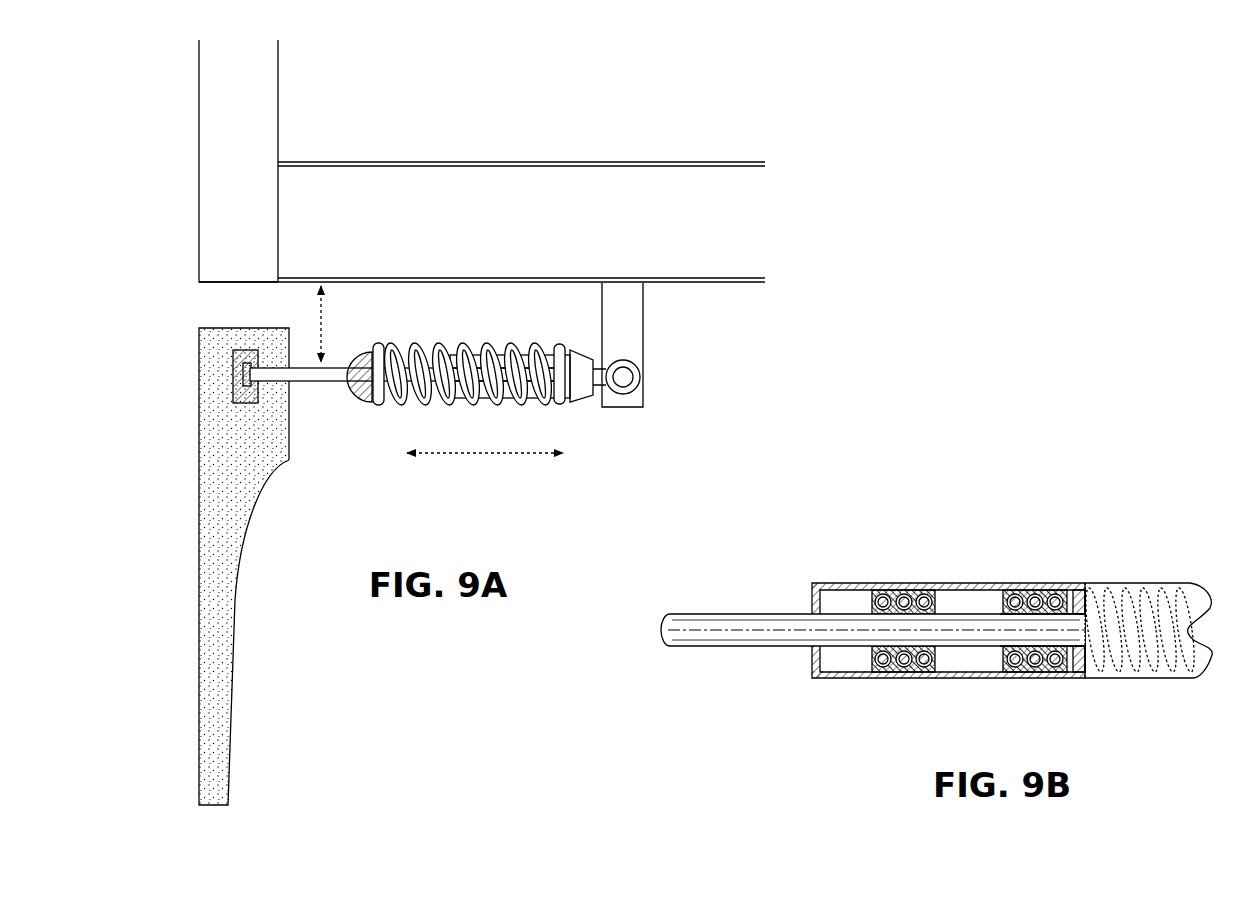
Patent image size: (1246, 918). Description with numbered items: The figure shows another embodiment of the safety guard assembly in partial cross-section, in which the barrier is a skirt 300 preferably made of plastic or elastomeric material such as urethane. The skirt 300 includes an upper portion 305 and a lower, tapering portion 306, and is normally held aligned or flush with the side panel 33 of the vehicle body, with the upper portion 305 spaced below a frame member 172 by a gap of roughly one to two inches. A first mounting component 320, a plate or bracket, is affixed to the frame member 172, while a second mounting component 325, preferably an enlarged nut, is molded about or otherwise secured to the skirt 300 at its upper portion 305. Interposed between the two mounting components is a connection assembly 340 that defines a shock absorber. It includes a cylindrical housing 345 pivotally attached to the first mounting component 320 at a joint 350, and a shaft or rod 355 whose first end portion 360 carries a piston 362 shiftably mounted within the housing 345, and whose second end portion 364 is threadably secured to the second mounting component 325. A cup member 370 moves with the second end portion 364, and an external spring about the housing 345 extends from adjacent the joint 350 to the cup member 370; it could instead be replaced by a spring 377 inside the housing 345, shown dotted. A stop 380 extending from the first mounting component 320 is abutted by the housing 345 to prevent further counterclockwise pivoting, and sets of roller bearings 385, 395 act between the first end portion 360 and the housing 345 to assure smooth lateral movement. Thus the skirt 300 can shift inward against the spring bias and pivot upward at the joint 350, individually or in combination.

In FIG. 9A, the side panel 33 is at (218, 144).
In FIG. 9A, the frame member 172 is at (417, 197).
In FIG. 9A, the skirt 300 is at (182, 566).
In FIG. 9A, the upper portion 305 is at (212, 393).
In FIG. 9A, the lower, tapering portion 306 is at (217, 682).
In FIG. 9A, the first mounting component 320 is at (634, 313).
In FIG. 9A, the second mounting component 325 is at (245, 352).
In FIG. 9A, the connection assembly 340 is at (494, 316).
In FIG. 9A, the housing 345 is at (508, 385).
In FIG. 9B, the housing 345 is at (840, 679).
In FIG. 9A, the joint 350 is at (632, 376).
In FIG. 9A, the shaft or rod 355 is at (406, 362).
In FIG. 9B, the shaft or rod 355 is at (738, 606).
In FIG. 9B, the first end portion 360 is at (978, 628).
In FIG. 9B, the piston 362 is at (1075, 596).
In FIG. 9A, the second end portion 364 is at (320, 380).
In FIG. 9A, the cup member 370 is at (367, 352).
In FIG. 9B, the spring 377 is at (1186, 583).
In FIG. 9A, the stop 380 is at (613, 407).
In FIG. 9B, the roller bearings 385 is at (864, 604).
In FIG. 9B, the roller bearings 395 is at (998, 654).